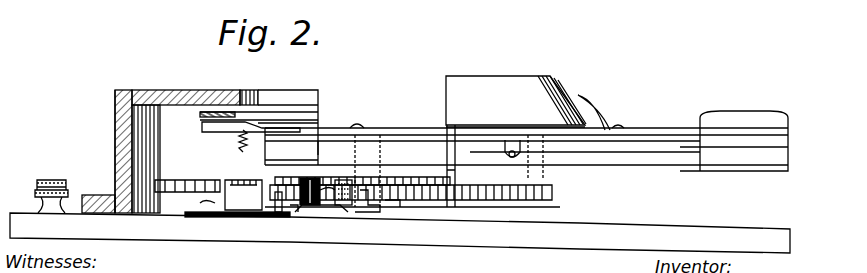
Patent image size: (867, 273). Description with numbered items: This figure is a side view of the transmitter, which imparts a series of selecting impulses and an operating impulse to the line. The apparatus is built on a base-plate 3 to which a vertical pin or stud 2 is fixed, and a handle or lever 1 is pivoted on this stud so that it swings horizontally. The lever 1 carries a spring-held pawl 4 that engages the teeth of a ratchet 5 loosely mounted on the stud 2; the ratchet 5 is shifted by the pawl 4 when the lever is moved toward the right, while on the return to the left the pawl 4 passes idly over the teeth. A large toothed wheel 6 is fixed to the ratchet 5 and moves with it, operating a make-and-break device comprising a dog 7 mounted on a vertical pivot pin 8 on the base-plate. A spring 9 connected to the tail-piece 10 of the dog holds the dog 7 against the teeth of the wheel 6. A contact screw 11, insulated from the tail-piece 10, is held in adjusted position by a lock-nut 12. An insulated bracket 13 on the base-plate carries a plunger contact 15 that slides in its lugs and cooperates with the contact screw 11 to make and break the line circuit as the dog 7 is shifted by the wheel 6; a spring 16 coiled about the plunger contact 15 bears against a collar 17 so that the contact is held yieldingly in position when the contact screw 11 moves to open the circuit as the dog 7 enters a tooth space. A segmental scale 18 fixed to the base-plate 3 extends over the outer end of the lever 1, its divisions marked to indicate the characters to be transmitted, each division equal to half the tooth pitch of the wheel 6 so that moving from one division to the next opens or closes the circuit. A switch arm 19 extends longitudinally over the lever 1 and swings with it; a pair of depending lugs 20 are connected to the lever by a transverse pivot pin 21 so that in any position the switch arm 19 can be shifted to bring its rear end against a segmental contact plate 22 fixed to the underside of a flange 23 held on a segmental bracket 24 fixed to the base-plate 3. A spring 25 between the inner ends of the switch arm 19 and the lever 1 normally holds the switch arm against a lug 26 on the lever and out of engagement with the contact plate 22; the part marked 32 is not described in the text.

The handle or lever 1 is at (600, 162).
The vertical pin or stud 2 is at (373, 130).
The base-plate 3 is at (355, 212).
The spring-held pawl 4 is at (463, 186).
The ratchet 5 is at (408, 178).
The toothed wheel 6 is at (500, 196).
The dog 7 is at (395, 193).
The vertical pivot pin 8 is at (312, 210).
The spring 9 is at (367, 207).
The tail-piece 10 is at (235, 176).
The contact screw 11 is at (526, 146).
The lock-nut 12 is at (327, 212).
The insulated bracket 13 is at (200, 209).
The plunger contact 15 is at (293, 212).
The spring 16 is at (236, 184).
The collar 17 is at (270, 188).
The segmental scale 18 is at (578, 88).
The switch arm 19 is at (645, 130).
The depending lugs 20 is at (525, 143).
The transverse pivot pin 21 is at (518, 155).
The segmental contact plate 22 is at (205, 130).
The flange 23 is at (185, 90).
The segmental bracket 24 is at (115, 135).
The spring 25 is at (262, 180).
The lug 26 is at (277, 135).
The spring hook 32 is at (600, 118).